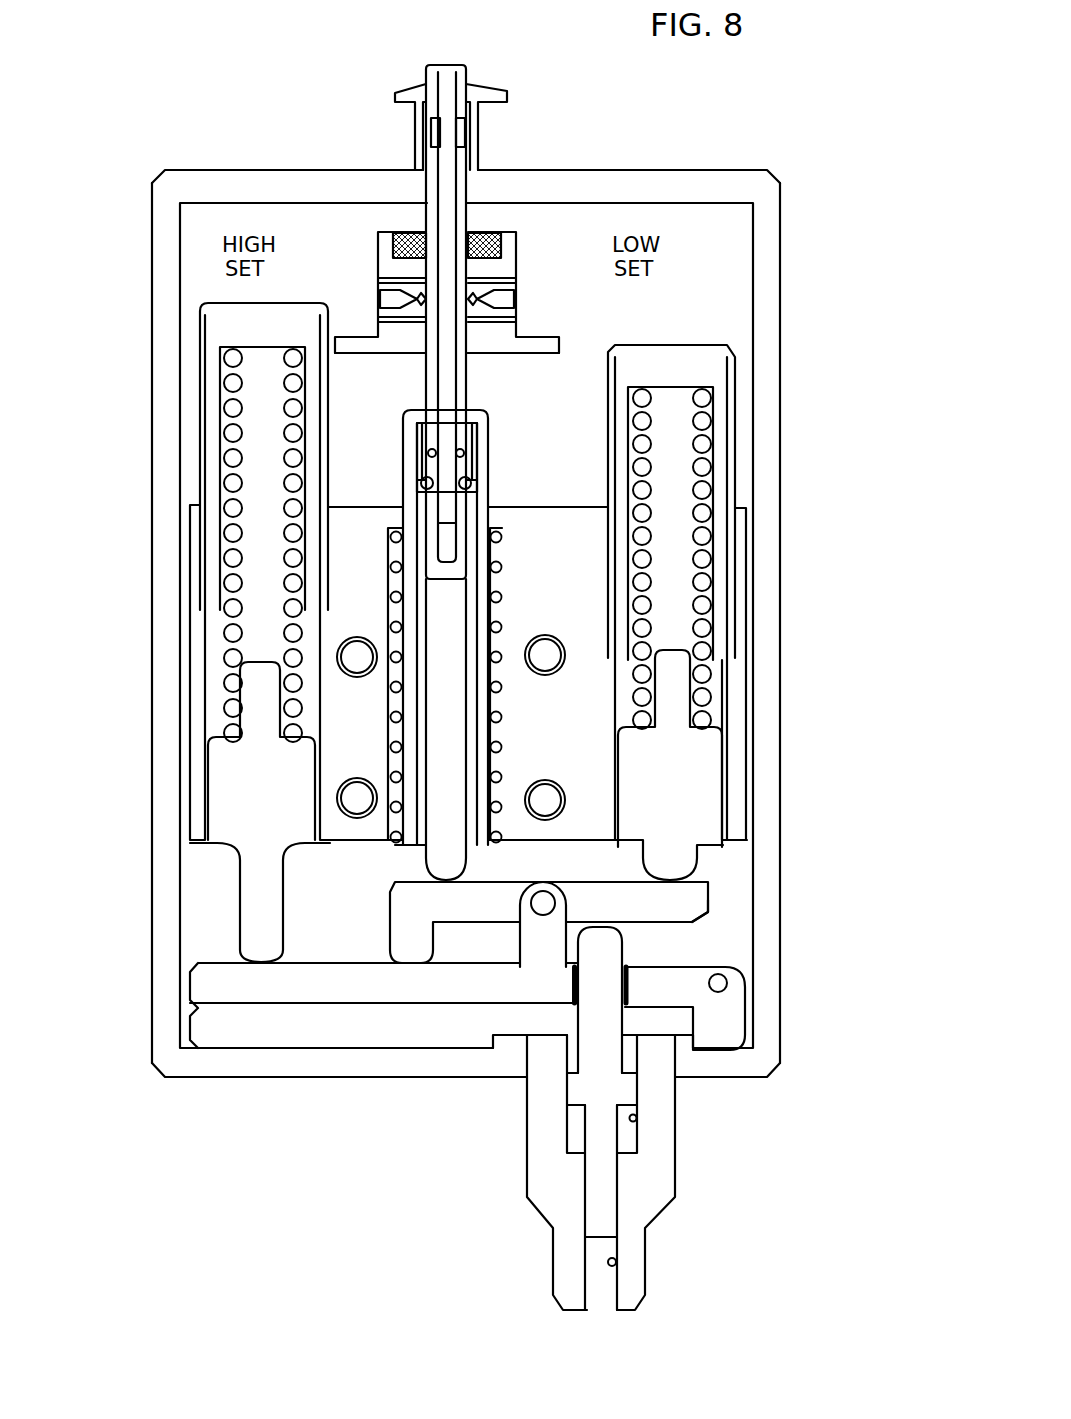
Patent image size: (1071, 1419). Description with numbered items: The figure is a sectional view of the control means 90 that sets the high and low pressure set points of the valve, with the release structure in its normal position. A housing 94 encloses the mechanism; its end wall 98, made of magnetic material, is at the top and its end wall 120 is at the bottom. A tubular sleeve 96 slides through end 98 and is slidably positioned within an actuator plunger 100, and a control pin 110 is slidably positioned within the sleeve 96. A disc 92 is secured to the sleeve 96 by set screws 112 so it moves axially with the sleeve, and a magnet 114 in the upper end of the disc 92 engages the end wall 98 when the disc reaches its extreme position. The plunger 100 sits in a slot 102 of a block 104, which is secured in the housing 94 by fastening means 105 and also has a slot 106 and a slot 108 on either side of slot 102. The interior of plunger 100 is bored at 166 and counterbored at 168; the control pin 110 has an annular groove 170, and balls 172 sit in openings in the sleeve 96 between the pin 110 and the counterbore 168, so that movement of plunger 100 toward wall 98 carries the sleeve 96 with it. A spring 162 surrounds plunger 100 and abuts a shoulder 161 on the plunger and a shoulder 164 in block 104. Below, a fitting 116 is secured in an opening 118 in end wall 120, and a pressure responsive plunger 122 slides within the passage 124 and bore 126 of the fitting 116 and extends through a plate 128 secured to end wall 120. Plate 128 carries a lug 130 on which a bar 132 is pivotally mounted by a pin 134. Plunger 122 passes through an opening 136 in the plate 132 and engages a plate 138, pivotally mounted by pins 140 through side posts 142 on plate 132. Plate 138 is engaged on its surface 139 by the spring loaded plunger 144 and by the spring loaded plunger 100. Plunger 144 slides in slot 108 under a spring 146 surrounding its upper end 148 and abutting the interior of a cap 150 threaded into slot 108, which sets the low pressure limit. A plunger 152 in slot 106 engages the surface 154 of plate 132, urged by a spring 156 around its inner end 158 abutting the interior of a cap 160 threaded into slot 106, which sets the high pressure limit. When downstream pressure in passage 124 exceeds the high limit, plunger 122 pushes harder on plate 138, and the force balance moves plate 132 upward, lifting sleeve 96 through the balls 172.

The control means 90 is at (128, 955).
The disc 92 is at (520, 353).
The housing 94 is at (152, 548).
The tubular sleeve 96 is at (416, 120).
The end wall 98 is at (572, 170).
The actuator plunger 100 is at (490, 492).
The slot 102 is at (405, 845).
The block 104 is at (330, 843).
The fastening means 105 is at (357, 637).
The slot 106 is at (205, 628).
The slot 108 is at (725, 702).
The control pin 110 is at (468, 66).
The set screws 112 is at (380, 298).
The magnet 114 is at (493, 232).
The fitting 116 is at (527, 1180).
The opening 118 is at (532, 1063).
The end wall 120 is at (320, 1077).
The pressure responsive plunger 122 is at (620, 1148).
The passage 124 is at (617, 1262).
The bore 126 is at (637, 1118).
The plate 128 is at (682, 1037).
The lug 130 is at (745, 990).
The bar 132 is at (667, 965).
The pin 134 is at (727, 979).
The opening 136 is at (625, 968).
The plate 138 is at (710, 897).
The surface 139 is at (470, 880).
The pins 140 is at (552, 897).
The side posts 142 is at (520, 946).
The spring loaded plunger 144 is at (697, 858).
The spring 146 is at (690, 670).
The upper end 148 is at (748, 605).
The cap 150 is at (718, 345).
The plunger 152 is at (240, 873).
The surface 154 is at (300, 963).
The spring 156 is at (220, 490).
The inner end 158 is at (224, 722).
The cap 160 is at (200, 336).
The shoulder 161 is at (497, 800).
The spring 162 is at (494, 716).
The shoulder 164 is at (502, 542).
The bore 166 is at (466, 623).
The counterbore 168 is at (472, 445).
The annular groove 170 is at (428, 453).
The balls 172 is at (421, 484).